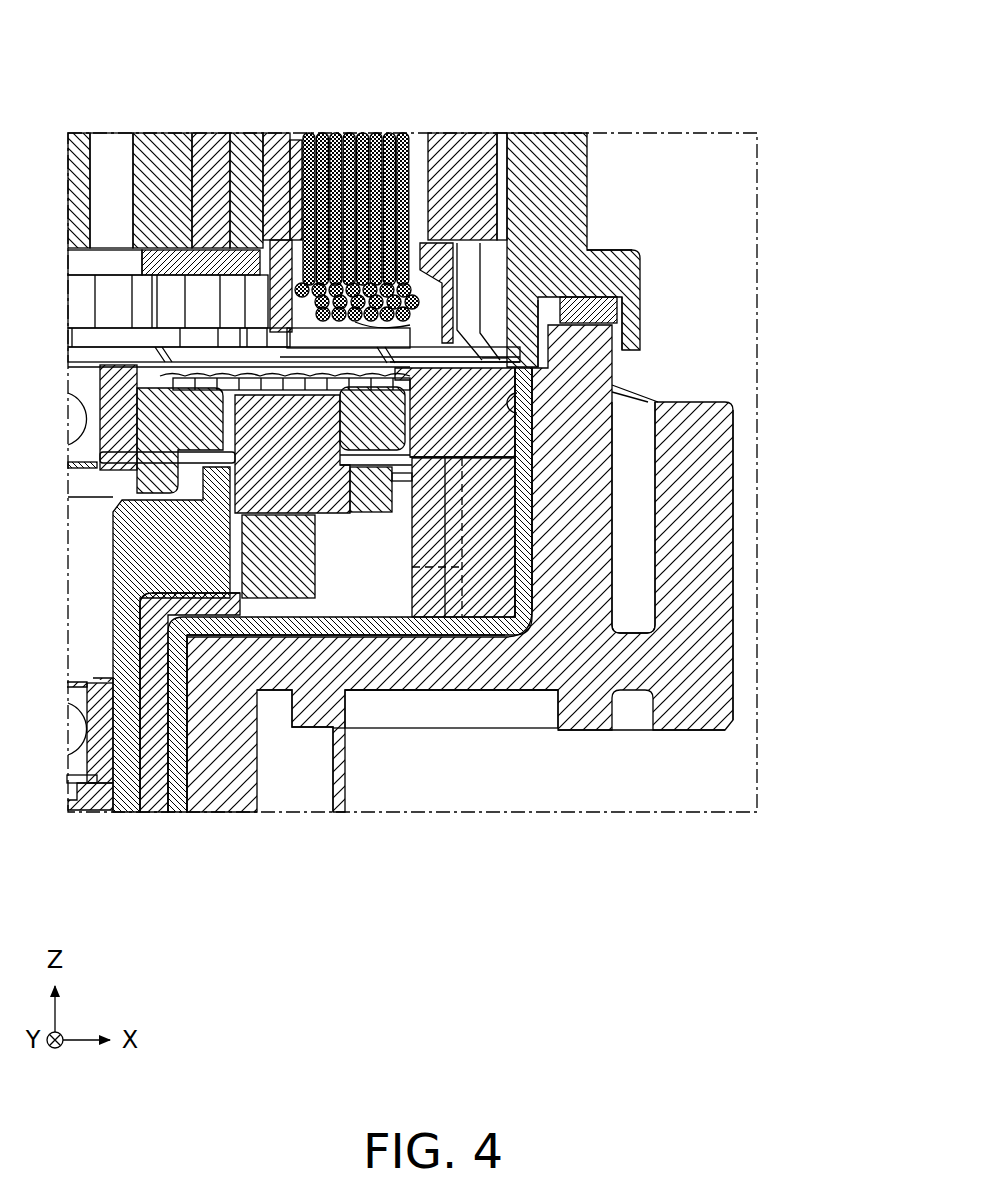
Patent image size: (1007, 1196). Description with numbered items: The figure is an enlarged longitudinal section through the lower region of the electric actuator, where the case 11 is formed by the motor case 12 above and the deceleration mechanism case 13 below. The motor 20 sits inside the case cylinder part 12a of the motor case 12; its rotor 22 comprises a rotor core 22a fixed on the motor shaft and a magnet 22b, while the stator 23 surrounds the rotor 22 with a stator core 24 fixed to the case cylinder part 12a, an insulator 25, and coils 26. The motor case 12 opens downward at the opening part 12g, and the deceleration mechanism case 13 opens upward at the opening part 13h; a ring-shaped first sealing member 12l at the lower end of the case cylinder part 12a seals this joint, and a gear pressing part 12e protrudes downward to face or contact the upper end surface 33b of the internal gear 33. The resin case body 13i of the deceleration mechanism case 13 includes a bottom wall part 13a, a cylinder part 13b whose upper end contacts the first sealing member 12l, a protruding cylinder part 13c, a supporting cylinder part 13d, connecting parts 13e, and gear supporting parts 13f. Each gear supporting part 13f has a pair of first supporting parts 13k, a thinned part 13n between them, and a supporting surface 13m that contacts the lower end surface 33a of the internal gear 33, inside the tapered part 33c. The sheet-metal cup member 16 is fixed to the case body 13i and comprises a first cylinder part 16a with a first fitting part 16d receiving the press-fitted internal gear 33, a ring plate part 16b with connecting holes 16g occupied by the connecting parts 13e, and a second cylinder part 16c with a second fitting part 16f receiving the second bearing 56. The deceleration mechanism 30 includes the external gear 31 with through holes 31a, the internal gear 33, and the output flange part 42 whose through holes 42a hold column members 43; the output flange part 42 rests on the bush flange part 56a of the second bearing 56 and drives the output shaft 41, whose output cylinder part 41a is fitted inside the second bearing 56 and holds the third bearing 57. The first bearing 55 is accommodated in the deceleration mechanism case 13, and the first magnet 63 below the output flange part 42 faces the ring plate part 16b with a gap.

The case 11 is at (593, 147).
The motor case 12 is at (556, 130).
The case cylinder part 12a is at (572, 197).
The opening part 12g is at (495, 330).
The first sealing member 12l is at (615, 312).
The gear pressing part 12e is at (612, 337).
The deceleration mechanism case 13 is at (742, 617).
The bottom wall part 13a is at (375, 677).
The cylinder part 13b is at (597, 562).
The protruding cylinder part 13c is at (232, 797).
The supporting cylinder part 13d is at (590, 565).
The connecting part 13e is at (465, 640).
The gear supporting part 13f is at (560, 490).
The opening part 13h is at (538, 300).
The case body 13i is at (742, 706).
The first supporting part 13k is at (615, 392).
The supporting surface 13m is at (505, 430).
The thinned part 13n is at (403, 547).
The cup member 16 is at (534, 634).
The first cylinder part 16a is at (530, 527).
The ring plate part 16b is at (278, 632).
The second cylinder part 16c is at (183, 730).
The first fitting part 16d is at (613, 383).
The second fitting part 16f is at (170, 740).
The connecting hole 16g is at (462, 460).
The motor 20 is at (380, 130).
The rotor 22 is at (72, 130).
The rotor core 22a is at (165, 145).
The magnet 22b is at (242, 150).
The stator 23 is at (477, 128).
The stator core 24 is at (493, 177).
The insulator 25 is at (262, 257).
The coil 26 is at (340, 140).
The deceleration mechanism 30 is at (185, 370).
The external gear 31 is at (168, 412).
The through hole 31a is at (178, 455).
The internal gear 33 is at (603, 370).
The end surface 33a is at (447, 460).
The end surface 33b is at (468, 365).
The tapered part 33c is at (482, 467).
The output shaft 41 is at (123, 702).
The output cylinder part 41a is at (127, 638).
The output flange part 42 is at (372, 500).
The through hole 42a is at (232, 478).
The column member 43 is at (285, 417).
The first bearing 55 is at (82, 420).
The second bearing 56 is at (155, 797).
The bush flange part 56a is at (195, 585).
The third bearing 57 is at (75, 728).
The first magnet 63 is at (255, 548).